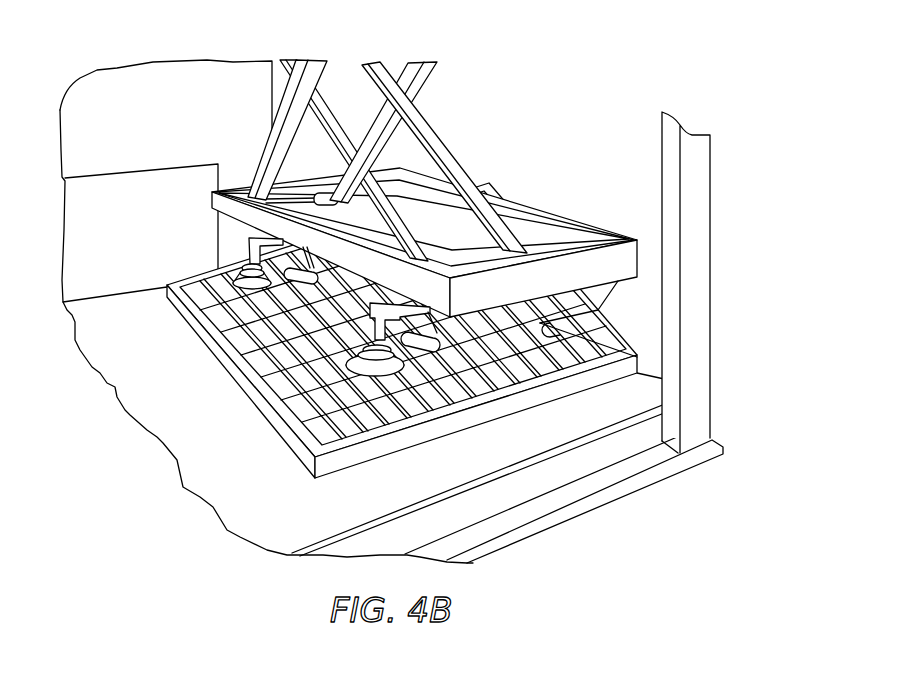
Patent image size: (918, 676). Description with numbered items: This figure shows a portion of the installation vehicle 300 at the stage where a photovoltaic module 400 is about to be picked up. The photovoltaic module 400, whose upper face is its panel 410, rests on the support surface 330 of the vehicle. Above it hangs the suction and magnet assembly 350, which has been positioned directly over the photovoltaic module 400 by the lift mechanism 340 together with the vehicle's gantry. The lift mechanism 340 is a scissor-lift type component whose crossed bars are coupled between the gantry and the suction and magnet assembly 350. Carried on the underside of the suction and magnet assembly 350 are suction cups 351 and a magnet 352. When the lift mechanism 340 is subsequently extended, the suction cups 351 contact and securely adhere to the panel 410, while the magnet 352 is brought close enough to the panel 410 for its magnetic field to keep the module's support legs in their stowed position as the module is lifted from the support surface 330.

The installation vehicle 300 is at (620, 84).
The support surface 330 is at (175, 404).
The lift mechanism 340 is at (422, 130).
The suction and magnet assembly 350 is at (622, 262).
The suction cups 351 is at (240, 274).
The magnet 352 is at (410, 349).
The photovoltaic module 400 is at (395, 330).
The panel 410 is at (334, 326).